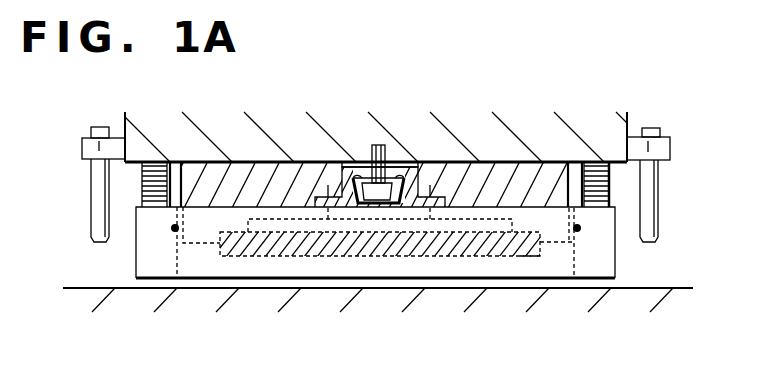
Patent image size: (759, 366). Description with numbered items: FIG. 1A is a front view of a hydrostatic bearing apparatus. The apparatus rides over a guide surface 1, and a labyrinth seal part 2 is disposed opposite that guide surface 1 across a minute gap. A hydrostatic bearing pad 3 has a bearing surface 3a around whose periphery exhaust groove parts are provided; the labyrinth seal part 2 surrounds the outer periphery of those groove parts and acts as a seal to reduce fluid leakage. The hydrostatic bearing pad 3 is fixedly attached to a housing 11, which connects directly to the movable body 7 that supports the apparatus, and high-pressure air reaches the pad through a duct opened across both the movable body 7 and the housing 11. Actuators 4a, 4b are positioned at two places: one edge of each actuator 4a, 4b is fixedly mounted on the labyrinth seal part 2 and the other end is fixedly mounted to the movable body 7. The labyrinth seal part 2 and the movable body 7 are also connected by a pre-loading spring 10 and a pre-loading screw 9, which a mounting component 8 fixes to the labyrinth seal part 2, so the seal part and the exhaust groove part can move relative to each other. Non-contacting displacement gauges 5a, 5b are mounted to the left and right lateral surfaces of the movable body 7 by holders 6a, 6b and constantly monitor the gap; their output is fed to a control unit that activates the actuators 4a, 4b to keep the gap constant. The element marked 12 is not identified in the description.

The guide surface 1 is at (147, 284).
The labyrinth seal part 2 is at (143, 258).
The hydrostatic bearing pad 3 is at (283, 256).
The bearing surface 3a is at (523, 256).
The actuator 4a is at (600, 183).
The actuator 4b is at (152, 181).
The non-contacting displacement gauge 5a is at (651, 128).
The non-contacting displacement gauge 5b is at (100, 128).
The holder 6a is at (665, 148).
The holder 6b is at (83, 146).
The movable body 7 is at (565, 133).
The mounting component 8 is at (414, 163).
The pre-loading screw 9 is at (372, 145).
The pre-loading spring 10 is at (356, 164).
The housing 11 is at (208, 177).
The temperature sensor 12 is at (577, 228).